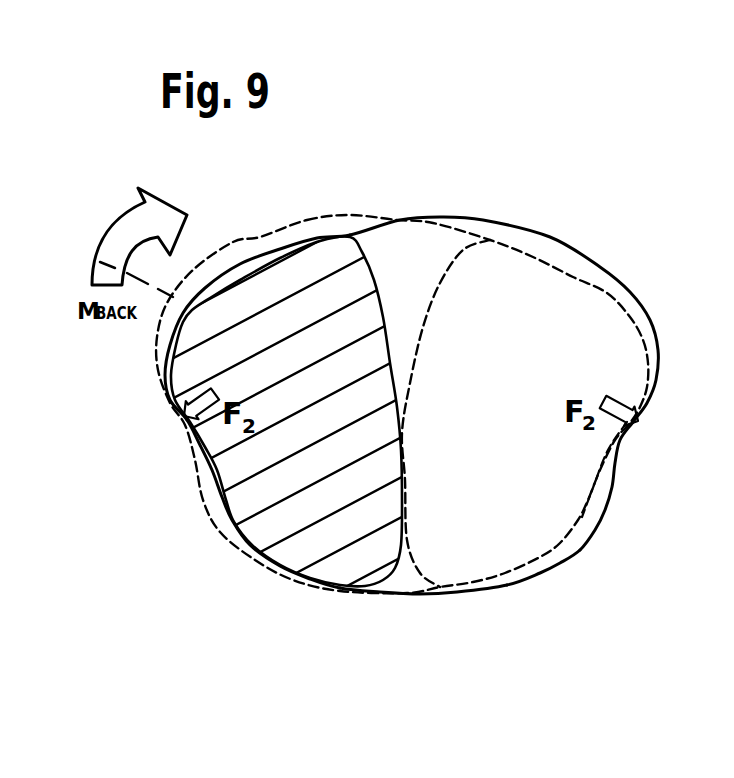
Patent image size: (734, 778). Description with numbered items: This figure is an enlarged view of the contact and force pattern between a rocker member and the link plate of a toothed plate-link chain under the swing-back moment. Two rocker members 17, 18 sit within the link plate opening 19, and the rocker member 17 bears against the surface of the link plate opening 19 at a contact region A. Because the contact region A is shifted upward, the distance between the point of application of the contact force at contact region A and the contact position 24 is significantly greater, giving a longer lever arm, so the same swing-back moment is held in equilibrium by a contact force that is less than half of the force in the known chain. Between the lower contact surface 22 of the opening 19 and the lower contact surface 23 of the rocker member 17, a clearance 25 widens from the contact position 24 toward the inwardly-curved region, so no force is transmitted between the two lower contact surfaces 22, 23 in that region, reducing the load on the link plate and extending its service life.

The rocker member 17 is at (572, 310).
The rocker member 18 is at (250, 502).
The link plate opening 19 is at (553, 250).
The lower contact surface 22 is at (553, 573).
The lower contact surface 23 is at (537, 557).
The contact position 24 is at (457, 592).
The clearance 25 is at (590, 523).
The contact region A is at (633, 421).